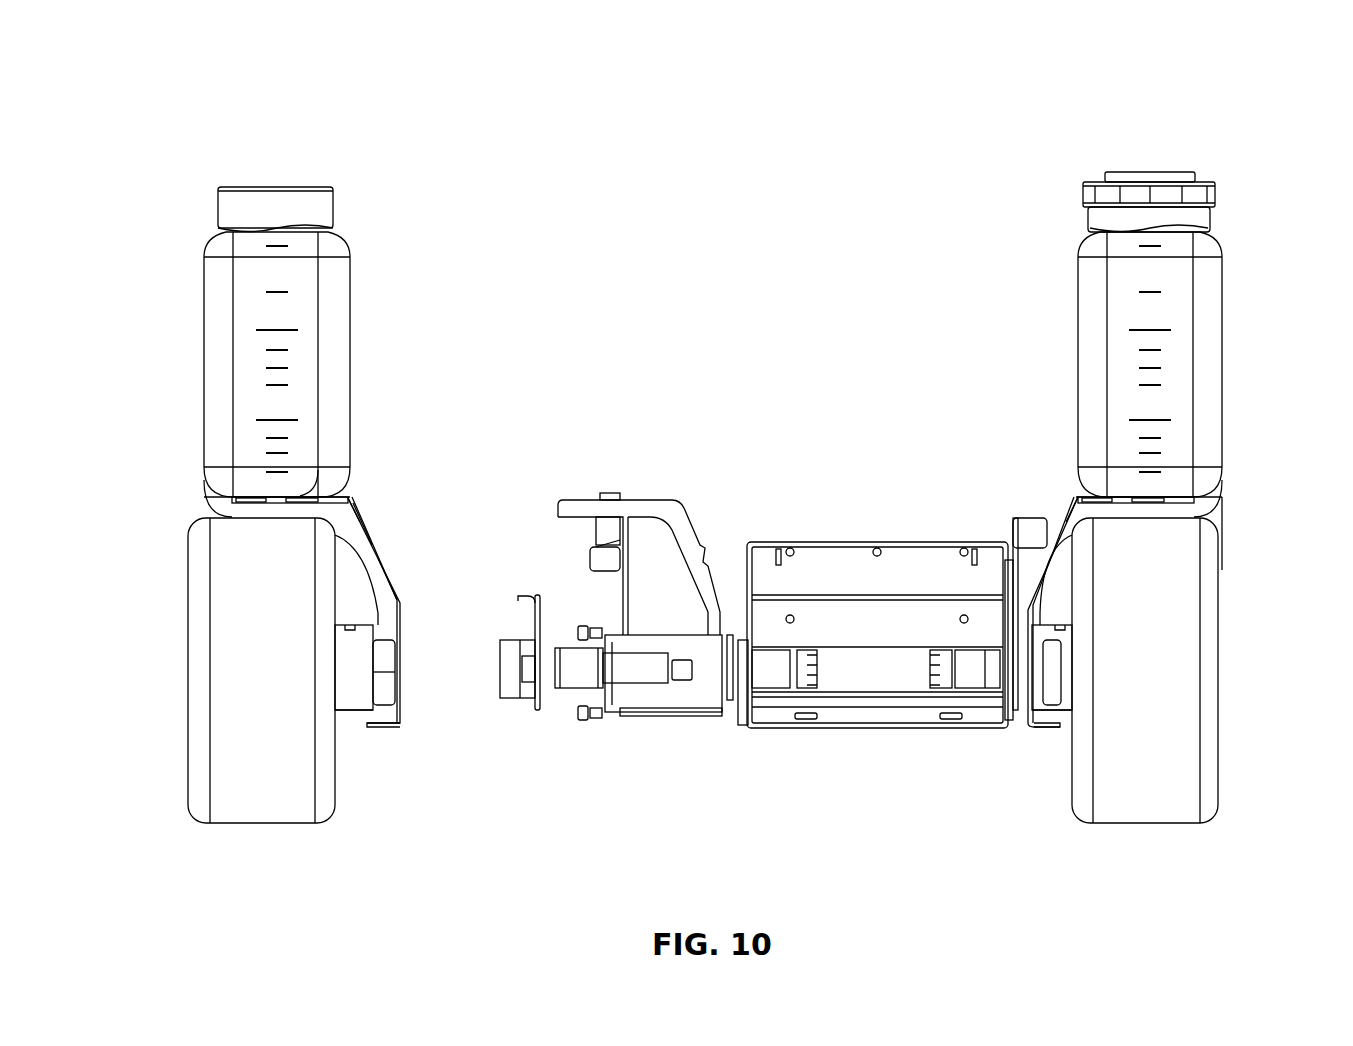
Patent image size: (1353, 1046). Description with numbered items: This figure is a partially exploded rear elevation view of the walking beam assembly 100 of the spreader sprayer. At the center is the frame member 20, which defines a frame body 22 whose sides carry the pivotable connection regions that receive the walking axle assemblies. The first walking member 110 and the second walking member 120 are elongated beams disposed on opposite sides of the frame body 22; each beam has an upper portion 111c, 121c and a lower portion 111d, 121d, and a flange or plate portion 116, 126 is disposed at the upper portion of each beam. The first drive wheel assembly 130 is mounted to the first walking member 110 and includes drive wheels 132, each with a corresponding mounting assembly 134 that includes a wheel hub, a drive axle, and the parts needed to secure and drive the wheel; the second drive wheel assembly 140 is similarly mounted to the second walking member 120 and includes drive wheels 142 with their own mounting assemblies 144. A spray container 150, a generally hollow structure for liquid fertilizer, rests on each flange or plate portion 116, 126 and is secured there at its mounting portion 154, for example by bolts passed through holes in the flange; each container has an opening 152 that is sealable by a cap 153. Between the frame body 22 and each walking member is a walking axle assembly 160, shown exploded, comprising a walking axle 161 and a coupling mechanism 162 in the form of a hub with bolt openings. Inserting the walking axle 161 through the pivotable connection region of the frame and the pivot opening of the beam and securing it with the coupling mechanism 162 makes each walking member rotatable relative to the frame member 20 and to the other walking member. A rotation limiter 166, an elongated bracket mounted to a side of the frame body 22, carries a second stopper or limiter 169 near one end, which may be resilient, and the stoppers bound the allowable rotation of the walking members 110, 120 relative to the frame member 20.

The walking beam assembly 100 is at (1220, 80).
The frame member 20 is at (840, 543).
The frame body 22 is at (770, 730).
The first walking member 110 is at (372, 562).
The upper portion 111c is at (372, 490).
The lower portion 111d is at (398, 740).
The flange or plate portion 116 is at (325, 492).
The second walking member 120 is at (1185, 512).
The upper portion 121c is at (1045, 484).
The lower portion 121d is at (1055, 745).
The flange or plate portion 126 is at (1065, 497).
The first drive wheel assembly 130 is at (176, 698).
The drive wheel 132 is at (238, 808).
The mounting assembly 134 is at (345, 770).
The second drive wheel assembly 140 is at (1230, 705).
The drive wheel 142 is at (1213, 765).
The mounting assembly 144 is at (975, 682).
The spray container 150 is at (340, 366).
The opening 152 is at (303, 182).
The cap 153 is at (1215, 190).
The mounting portion 154 is at (208, 502).
The walking axle assembly 160 is at (553, 716).
The walking axle 161 is at (630, 682).
The coupling mechanism 162 is at (515, 708).
The rotation limiter 166 is at (605, 528).
The second stopper or limiter 169 is at (608, 558).